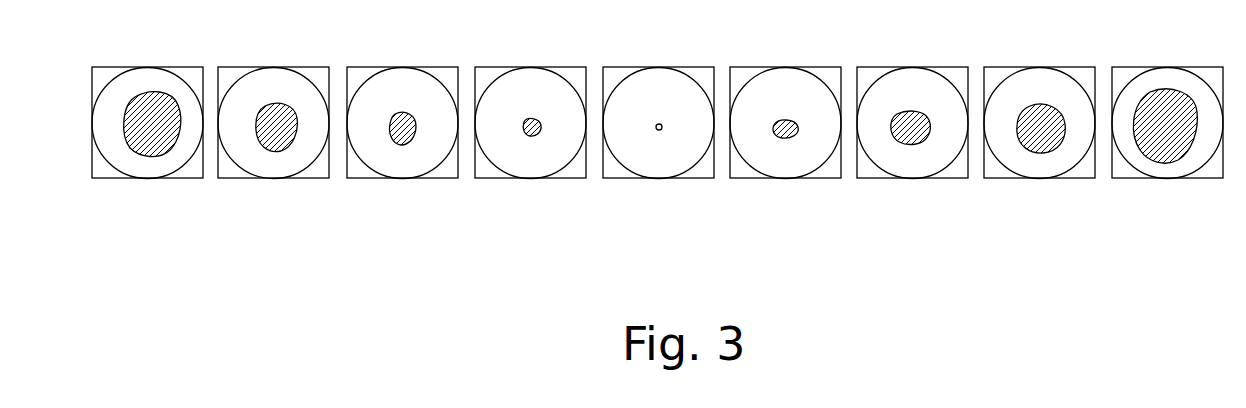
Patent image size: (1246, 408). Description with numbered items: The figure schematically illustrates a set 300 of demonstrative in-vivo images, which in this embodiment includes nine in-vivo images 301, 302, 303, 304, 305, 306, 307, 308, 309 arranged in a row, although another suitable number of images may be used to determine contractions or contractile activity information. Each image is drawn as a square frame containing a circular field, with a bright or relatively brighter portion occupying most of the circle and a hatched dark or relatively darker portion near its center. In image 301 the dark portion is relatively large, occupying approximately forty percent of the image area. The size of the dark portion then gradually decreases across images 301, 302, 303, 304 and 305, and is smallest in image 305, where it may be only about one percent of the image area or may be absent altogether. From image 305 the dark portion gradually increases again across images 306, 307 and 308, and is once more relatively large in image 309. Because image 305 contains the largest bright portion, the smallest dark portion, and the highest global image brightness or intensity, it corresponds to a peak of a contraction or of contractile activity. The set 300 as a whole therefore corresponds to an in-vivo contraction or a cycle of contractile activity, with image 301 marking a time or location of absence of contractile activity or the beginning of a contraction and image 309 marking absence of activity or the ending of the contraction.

The set of demonstrative in-vivo images 300 is at (162, 285).
The in-vivo image 301 is at (174, 66).
The in-vivo image 302 is at (301, 66).
The in-vivo image 303 is at (430, 66).
The in-vivo image 304 is at (557, 66).
The in-vivo image 305 is at (685, 66).
The in-vivo image 306 is at (812, 66).
The in-vivo image 307 is at (939, 66).
The in-vivo image 308 is at (1066, 66).
The in-vivo image 309 is at (1194, 66).